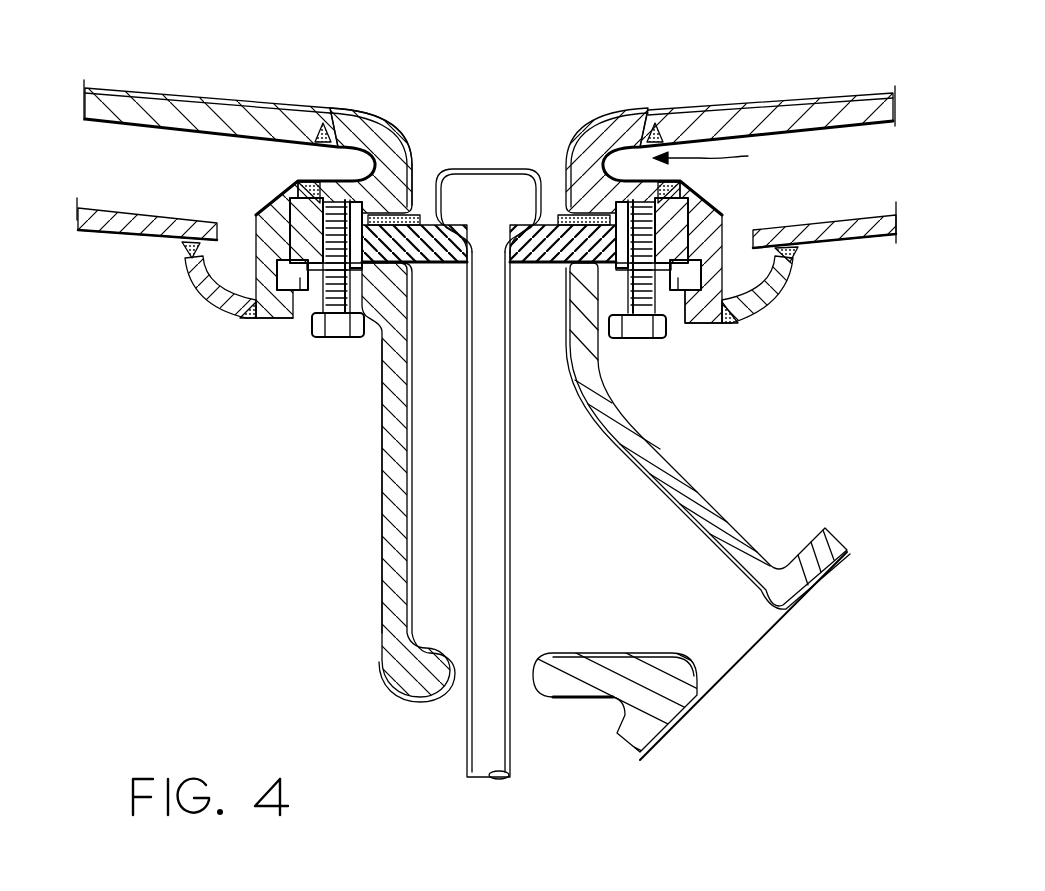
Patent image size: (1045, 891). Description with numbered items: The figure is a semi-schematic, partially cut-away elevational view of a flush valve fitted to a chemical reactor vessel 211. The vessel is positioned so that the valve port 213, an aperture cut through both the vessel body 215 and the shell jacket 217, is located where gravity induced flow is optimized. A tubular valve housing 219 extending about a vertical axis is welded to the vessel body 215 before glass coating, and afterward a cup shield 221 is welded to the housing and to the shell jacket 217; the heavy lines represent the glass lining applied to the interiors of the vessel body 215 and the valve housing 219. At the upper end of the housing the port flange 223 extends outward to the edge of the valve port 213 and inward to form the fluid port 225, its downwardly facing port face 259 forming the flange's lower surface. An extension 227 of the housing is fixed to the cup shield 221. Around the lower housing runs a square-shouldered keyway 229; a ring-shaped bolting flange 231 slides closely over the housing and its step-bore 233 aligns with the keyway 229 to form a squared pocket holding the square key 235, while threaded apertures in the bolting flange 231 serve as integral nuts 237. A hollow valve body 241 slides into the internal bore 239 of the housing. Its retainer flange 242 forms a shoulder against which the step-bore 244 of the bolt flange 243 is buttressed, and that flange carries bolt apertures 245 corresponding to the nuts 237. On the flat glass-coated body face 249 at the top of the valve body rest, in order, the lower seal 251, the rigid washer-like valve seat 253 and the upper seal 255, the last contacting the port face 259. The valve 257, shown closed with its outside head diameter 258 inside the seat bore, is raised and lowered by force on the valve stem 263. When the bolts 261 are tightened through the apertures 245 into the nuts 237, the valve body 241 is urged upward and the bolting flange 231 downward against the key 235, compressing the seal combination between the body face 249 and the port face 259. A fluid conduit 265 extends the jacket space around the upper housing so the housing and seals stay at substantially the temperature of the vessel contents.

The vessel 211 is at (768, 84).
The valve port 213 is at (645, 124).
The vessel body 215 is at (114, 100).
The shell jacket 217 is at (113, 236).
The valve housing 219 is at (353, 154).
The cup shield 221 is at (197, 272).
The port flange 223 is at (342, 107).
The fluid port 225 is at (376, 150).
The extension 227 is at (670, 182).
The keyway 229 is at (757, 288).
The bolting flange 231 is at (247, 304).
The step-bore 233 is at (288, 319).
The key 235 is at (690, 312).
The nuts 237 is at (284, 217).
The internal bore 239 is at (298, 234).
The valve body 241 is at (384, 520).
The retainer flange 242 is at (678, 298).
The bolt flange 243 is at (668, 322).
The step-bore 244 is at (300, 292).
The bolt apertures 245 is at (312, 318).
The body face 249 is at (606, 322).
The lower seal 251 is at (573, 265).
The valve seat 253 is at (463, 266).
The upper seal 255 is at (560, 208).
The valve 257 is at (491, 182).
The outside head diameter 258 is at (434, 198).
The port face 259 is at (408, 205).
The bolts 261 is at (334, 338).
The valve stem 263 is at (497, 540).
The fluid conduit 265 is at (727, 155).